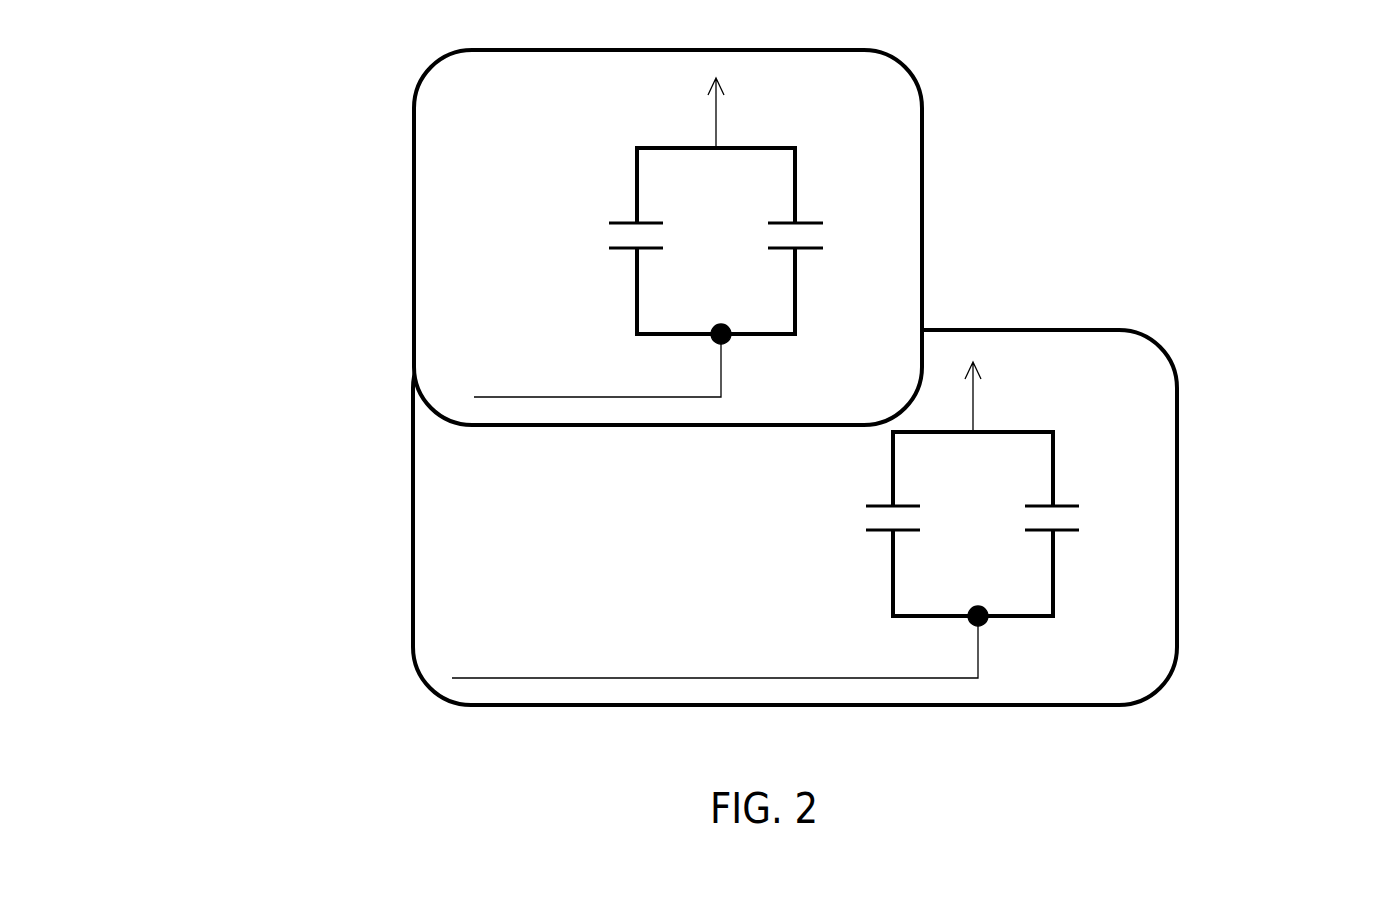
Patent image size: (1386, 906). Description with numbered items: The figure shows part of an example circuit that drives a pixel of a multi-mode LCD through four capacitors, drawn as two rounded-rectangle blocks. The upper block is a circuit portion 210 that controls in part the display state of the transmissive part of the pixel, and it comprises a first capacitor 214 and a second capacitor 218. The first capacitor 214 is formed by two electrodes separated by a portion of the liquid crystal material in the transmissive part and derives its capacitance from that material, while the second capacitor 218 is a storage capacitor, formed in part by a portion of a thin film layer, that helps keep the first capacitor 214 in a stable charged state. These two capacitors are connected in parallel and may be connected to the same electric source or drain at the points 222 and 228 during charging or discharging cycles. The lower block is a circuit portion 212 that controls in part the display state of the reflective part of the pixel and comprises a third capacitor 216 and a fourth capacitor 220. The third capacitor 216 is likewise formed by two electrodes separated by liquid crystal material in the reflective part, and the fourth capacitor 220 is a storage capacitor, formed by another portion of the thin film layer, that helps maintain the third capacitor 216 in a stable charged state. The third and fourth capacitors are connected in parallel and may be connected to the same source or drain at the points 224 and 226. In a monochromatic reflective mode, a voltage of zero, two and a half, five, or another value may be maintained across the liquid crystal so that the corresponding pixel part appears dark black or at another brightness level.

The circuit portion 210 is at (877, 86).
The circuit portion 212 is at (1095, 361).
The first capacitor 214 is at (813, 238).
The third capacitor 216 is at (1060, 515).
The second capacitor 218 is at (618, 235).
The fourth capacitor 220 is at (880, 515).
The point 222 is at (530, 391).
The point 224 is at (544, 678).
The point 226 is at (974, 390).
The point 228 is at (717, 111).